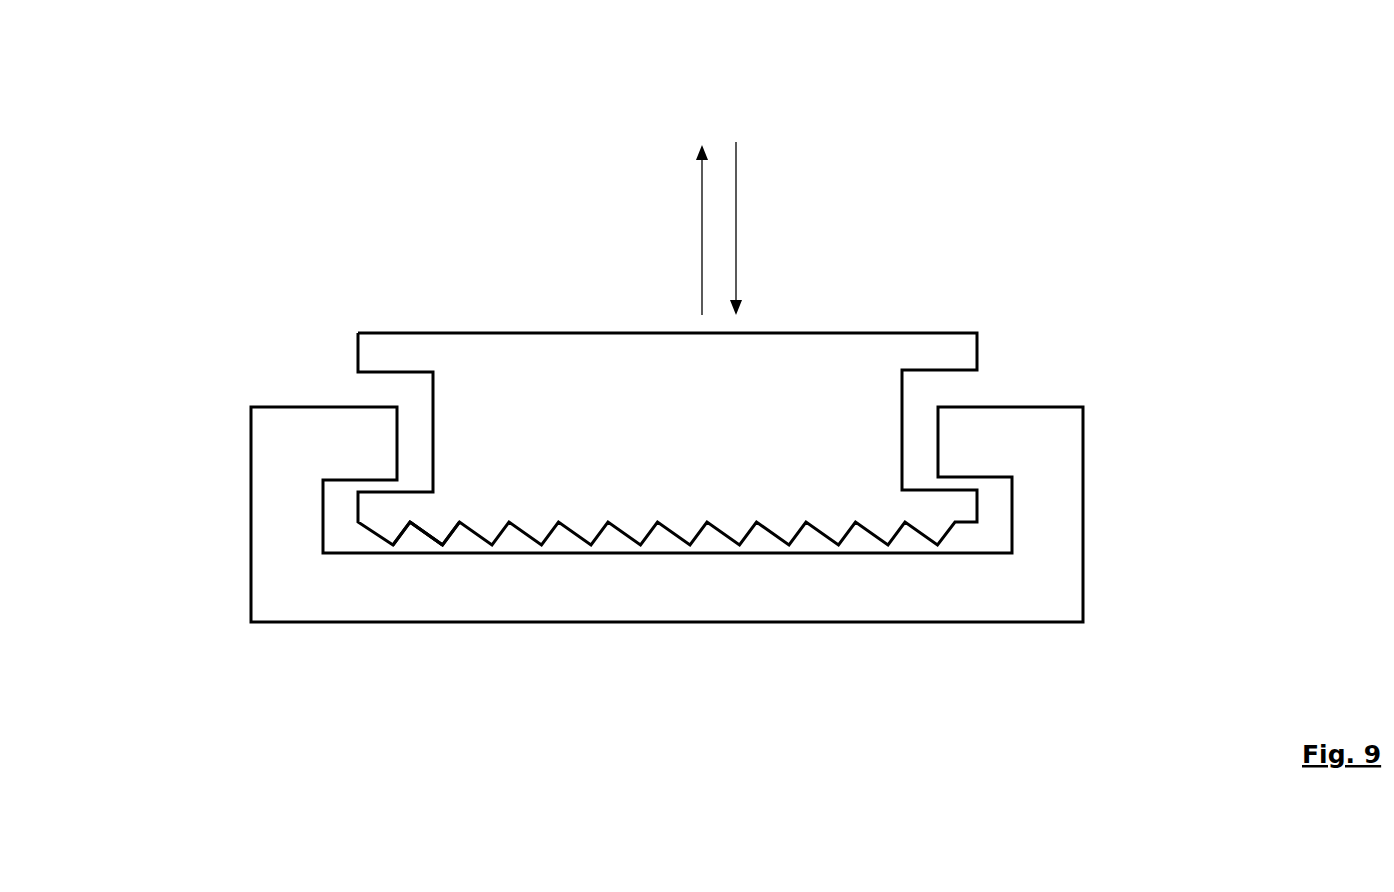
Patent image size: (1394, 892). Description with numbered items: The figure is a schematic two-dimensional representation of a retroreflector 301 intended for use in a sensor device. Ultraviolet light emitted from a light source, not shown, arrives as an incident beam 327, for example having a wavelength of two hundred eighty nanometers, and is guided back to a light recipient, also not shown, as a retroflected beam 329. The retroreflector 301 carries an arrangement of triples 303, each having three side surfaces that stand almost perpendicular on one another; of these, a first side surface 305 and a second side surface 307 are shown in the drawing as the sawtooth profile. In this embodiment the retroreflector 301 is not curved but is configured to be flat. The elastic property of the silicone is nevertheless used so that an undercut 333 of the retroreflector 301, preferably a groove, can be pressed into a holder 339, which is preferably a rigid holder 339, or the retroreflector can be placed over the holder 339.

The retroreflector 301 is at (126, 92).
The triples 303 is at (409, 497).
The first side surface 305 is at (436, 535).
The second side surface 307 is at (458, 533).
The incident beam 327 is at (736, 218).
The retroflected beam 329 is at (702, 218).
The undercut 333 is at (375, 483).
The holder 339 is at (1021, 457).